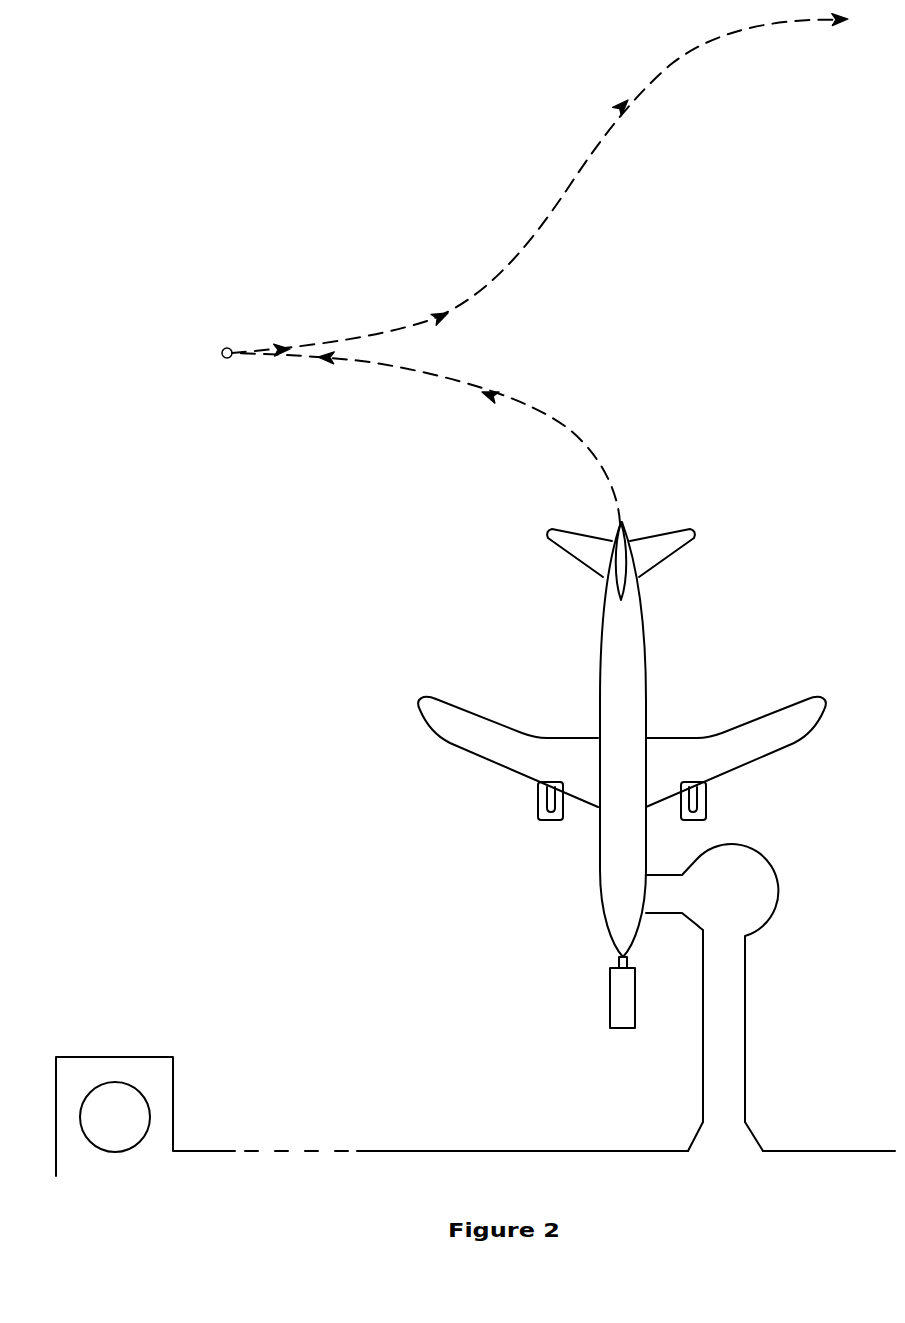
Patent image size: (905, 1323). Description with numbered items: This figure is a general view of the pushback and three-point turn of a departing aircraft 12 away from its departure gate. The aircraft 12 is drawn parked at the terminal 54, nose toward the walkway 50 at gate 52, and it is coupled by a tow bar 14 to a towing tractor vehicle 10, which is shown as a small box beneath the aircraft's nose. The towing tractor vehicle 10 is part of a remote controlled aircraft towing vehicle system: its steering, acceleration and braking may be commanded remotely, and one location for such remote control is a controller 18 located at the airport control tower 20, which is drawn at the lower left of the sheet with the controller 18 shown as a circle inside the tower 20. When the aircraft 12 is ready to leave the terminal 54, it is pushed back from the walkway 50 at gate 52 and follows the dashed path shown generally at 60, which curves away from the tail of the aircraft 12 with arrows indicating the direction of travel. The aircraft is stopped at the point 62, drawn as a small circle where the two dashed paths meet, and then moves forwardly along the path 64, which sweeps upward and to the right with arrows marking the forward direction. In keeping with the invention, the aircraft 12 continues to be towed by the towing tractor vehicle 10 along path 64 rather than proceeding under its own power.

The towing tractor vehicle 10 is at (617, 1008).
The aircraft 12 is at (633, 678).
The tow bar 14 is at (618, 960).
The controller 18 is at (135, 1126).
The airport control tower 20 is at (174, 1087).
The walkway 50 is at (738, 1008).
The gate 52 is at (718, 1151).
The terminal 54 is at (518, 1165).
The path 60 is at (555, 427).
The stop point 62 is at (229, 347).
The path 64 is at (534, 245).